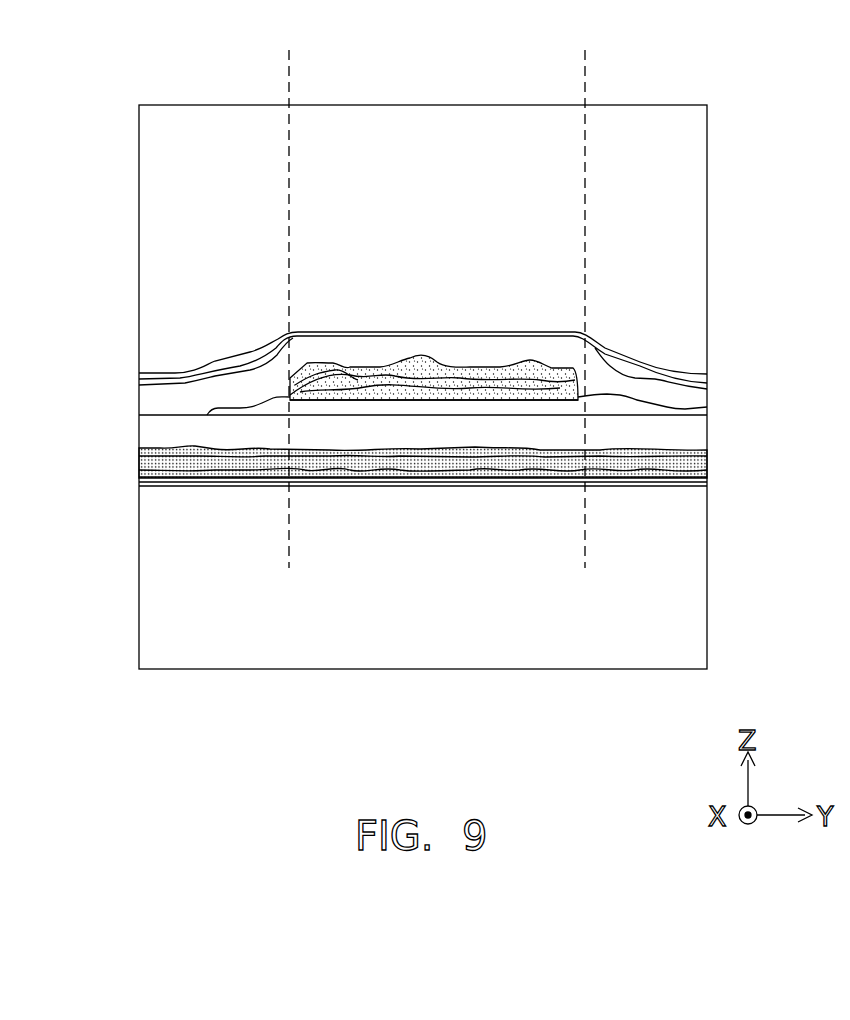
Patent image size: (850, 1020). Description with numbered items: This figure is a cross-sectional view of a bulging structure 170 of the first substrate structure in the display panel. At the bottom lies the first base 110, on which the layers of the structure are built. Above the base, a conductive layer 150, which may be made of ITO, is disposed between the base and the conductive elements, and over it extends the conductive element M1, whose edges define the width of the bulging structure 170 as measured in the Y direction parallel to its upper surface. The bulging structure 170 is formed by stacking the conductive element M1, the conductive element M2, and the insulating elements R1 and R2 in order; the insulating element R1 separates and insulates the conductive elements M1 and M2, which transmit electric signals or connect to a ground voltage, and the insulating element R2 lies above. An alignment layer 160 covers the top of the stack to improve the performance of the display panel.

The bulging structure 170 is at (415, 124).
The alignment layer 160 is at (652, 370).
The insulating element R2 is at (667, 397).
The insulating element R1 is at (680, 417).
The conductive element M2 is at (290, 377).
The conductive element M1 is at (690, 463).
The conductive layer 150 is at (687, 488).
The first base 110 is at (685, 578).